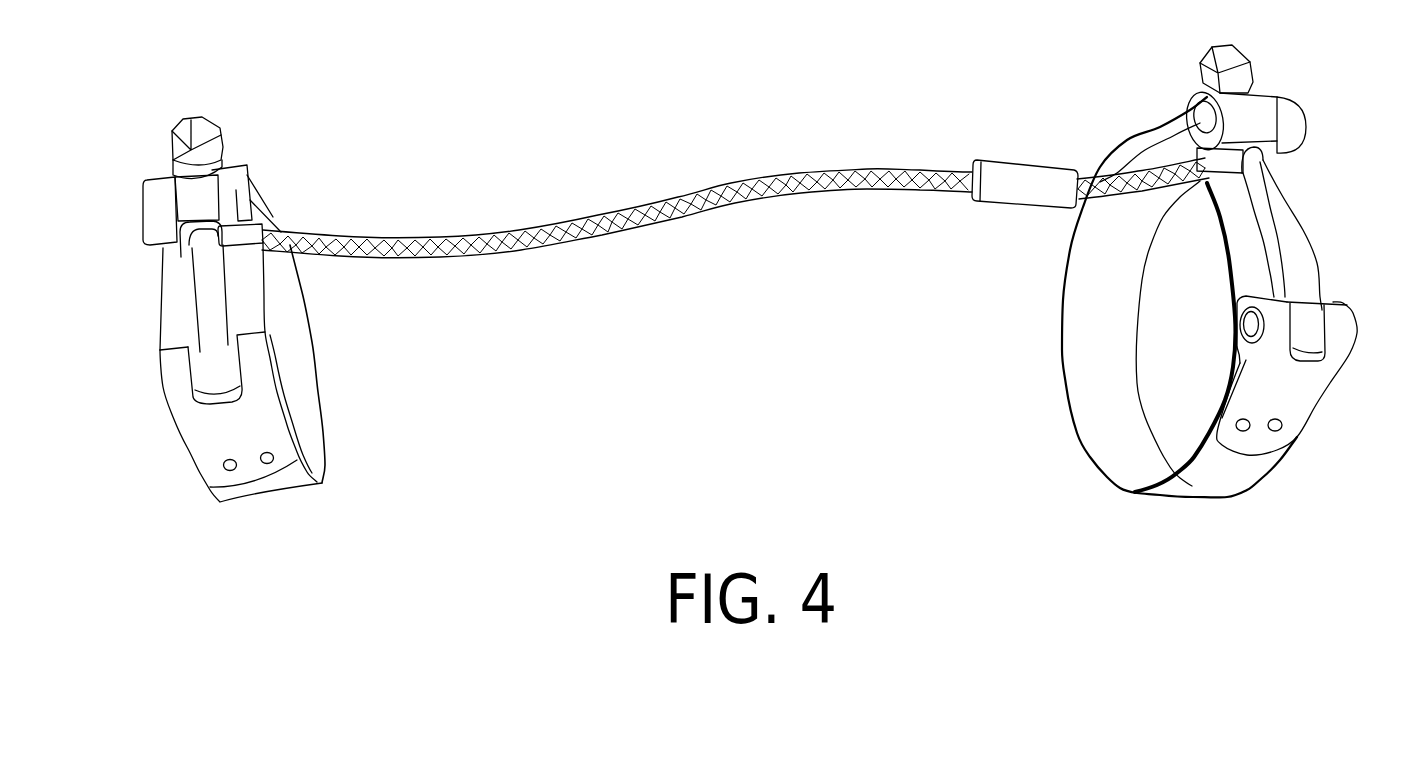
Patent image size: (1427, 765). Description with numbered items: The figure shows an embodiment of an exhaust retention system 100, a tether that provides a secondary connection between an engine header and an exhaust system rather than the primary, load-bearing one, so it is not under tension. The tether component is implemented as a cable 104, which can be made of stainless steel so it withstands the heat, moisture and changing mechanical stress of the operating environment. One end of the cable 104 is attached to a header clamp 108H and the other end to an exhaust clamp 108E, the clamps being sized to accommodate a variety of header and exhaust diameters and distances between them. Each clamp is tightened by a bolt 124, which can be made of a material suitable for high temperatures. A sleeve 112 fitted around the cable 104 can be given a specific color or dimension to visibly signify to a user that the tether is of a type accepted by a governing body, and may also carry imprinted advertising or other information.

The exhaust retention system 100 is at (772, 369).
The cable 104 is at (697, 203).
The header clamp 108H is at (307, 391).
The exhaust clamp 108E is at (1108, 380).
The sleeve 112 is at (1028, 178).
The bolt 124 is at (212, 295).